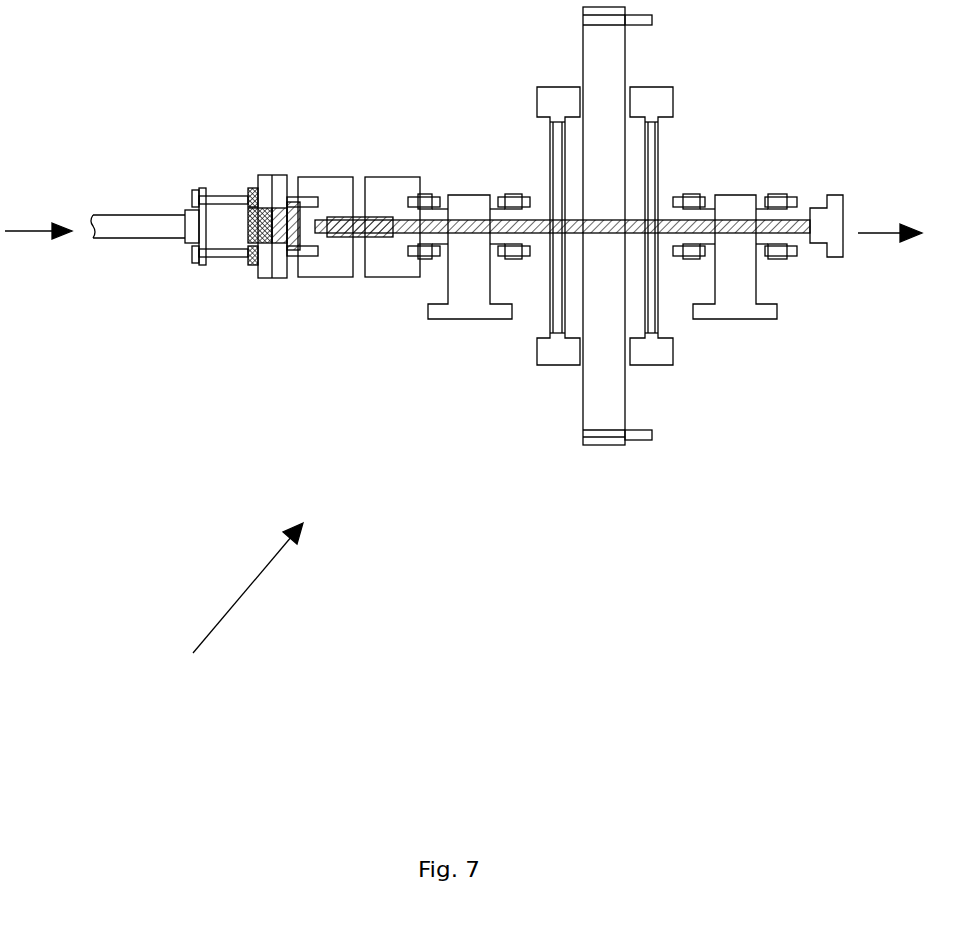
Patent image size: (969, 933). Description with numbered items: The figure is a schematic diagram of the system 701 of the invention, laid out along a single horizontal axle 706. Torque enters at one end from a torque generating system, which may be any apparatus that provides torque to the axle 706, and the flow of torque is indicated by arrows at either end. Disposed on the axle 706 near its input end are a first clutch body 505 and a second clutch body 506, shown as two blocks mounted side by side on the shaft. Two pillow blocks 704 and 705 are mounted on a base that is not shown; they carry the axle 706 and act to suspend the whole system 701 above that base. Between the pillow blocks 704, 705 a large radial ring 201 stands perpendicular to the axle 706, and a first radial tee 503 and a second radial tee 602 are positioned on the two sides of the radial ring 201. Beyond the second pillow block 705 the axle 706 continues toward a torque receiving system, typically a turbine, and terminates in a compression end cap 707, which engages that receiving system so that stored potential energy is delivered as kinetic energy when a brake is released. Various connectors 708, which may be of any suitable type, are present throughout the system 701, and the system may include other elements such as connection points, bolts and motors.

The radial ring 201 is at (583, 397).
The first radial tee 503 is at (537, 367).
The first clutch body 505 is at (338, 175).
The second clutch body 506 is at (393, 188).
The second radial tee 602 is at (672, 365).
The system 701 is at (240, 607).
The pillow block 704 is at (425, 320).
The pillow block 705 is at (722, 320).
The axle 706 is at (790, 235).
The compression end cap 707 is at (835, 195).
The connectors 708 is at (432, 208).